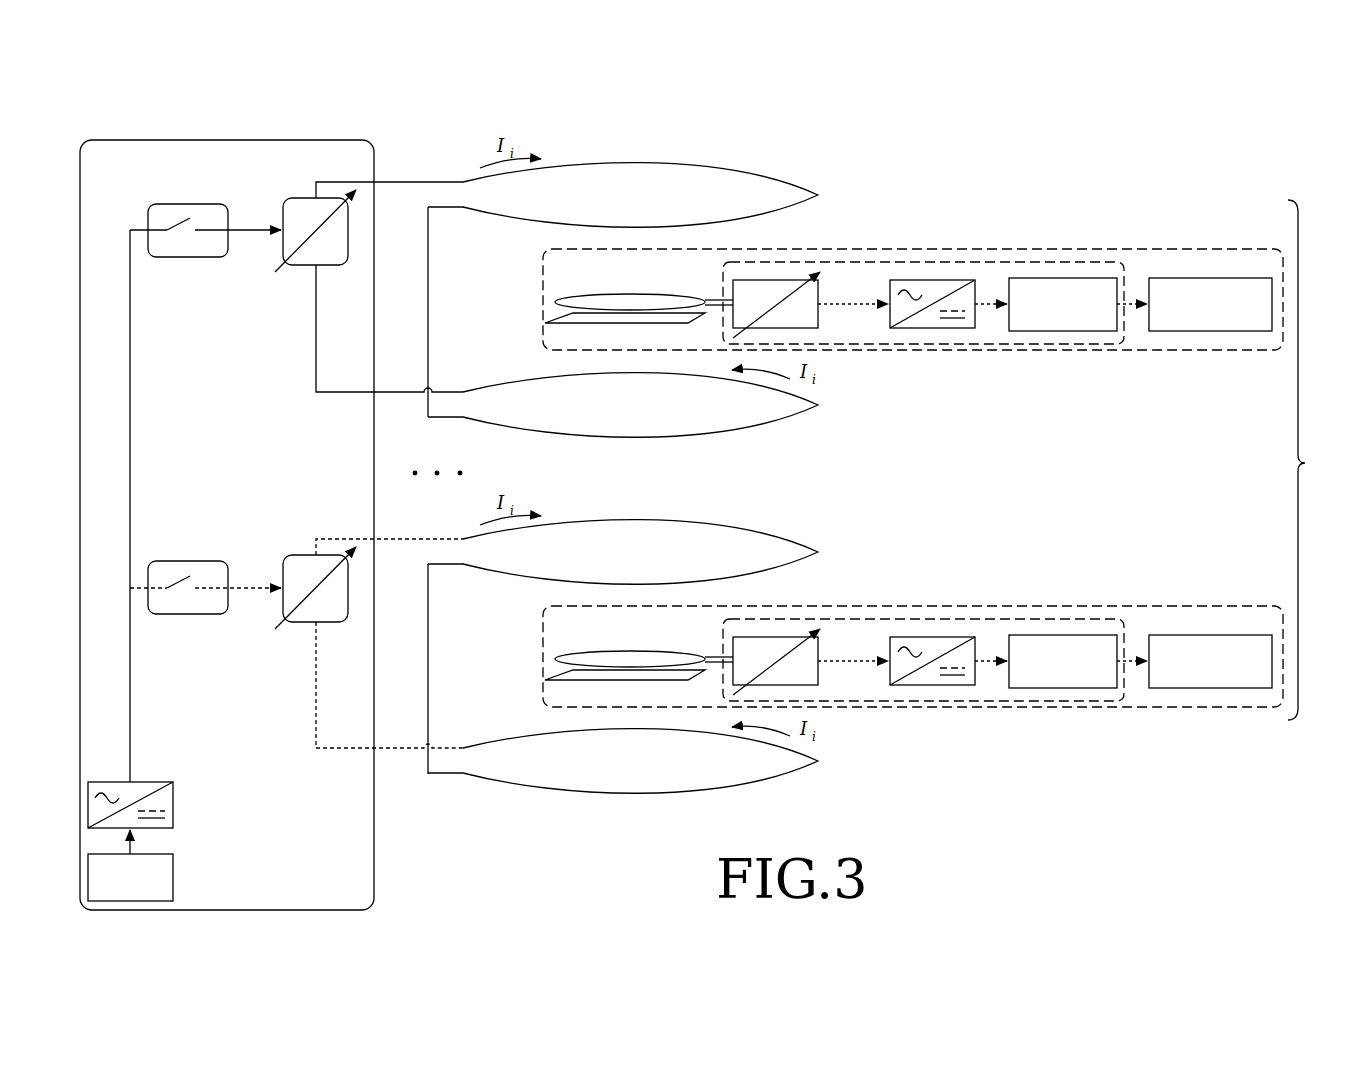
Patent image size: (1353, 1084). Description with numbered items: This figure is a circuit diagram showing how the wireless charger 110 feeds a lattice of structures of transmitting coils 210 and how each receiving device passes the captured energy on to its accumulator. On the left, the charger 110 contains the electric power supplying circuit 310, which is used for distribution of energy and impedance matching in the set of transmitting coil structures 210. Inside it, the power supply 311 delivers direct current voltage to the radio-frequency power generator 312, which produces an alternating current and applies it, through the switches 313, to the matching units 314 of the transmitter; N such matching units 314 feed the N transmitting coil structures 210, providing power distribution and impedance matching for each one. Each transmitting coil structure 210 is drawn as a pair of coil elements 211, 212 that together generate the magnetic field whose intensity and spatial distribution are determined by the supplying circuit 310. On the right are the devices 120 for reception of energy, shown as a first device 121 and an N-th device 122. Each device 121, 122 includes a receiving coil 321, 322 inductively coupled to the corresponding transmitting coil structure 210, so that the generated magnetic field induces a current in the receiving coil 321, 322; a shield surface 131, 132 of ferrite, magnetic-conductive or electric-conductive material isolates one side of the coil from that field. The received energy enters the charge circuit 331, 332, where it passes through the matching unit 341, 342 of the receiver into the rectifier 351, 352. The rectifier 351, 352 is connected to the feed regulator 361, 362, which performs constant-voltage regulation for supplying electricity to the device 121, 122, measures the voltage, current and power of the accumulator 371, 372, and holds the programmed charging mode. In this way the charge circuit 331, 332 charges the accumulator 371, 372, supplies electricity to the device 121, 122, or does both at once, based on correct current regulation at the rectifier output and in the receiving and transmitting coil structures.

The wireless charger 110 is at (442, 120).
The device for reception of energy 120 is at (1320, 460).
The first device for reception of energy 121 is at (1157, 352).
The second device for reception of energy 122 is at (1157, 709).
The shield surface 131 is at (612, 324).
The shield surface 132 is at (612, 681).
The structure of transmitting coil 210 is at (492, 266).
The first antenna arm 211 is at (530, 228).
The second antenna arm 212 is at (530, 372).
The electric power supplying circuit 310 is at (374, 845).
The power supply 311 is at (173, 878).
The radio-frequency power generator 312 is at (173, 805).
The switch 313 is at (185, 257).
The matching unit of the transmitter 314 is at (296, 265).
The receiving coil 321 is at (640, 293).
The receiving coil 322 is at (640, 650).
The charge circuit 331 is at (920, 344).
The charge circuit 332 is at (920, 701).
The matching unit of the receiver 341 is at (782, 279).
The matching unit of the receiver 342 is at (782, 636).
The rectifier 351 is at (930, 279).
The rectifier 352 is at (930, 636).
The feed regulator 361 is at (1075, 277).
The feed regulator 362 is at (1075, 634).
The accumulator 371 is at (1195, 277).
The accumulator 372 is at (1195, 634).